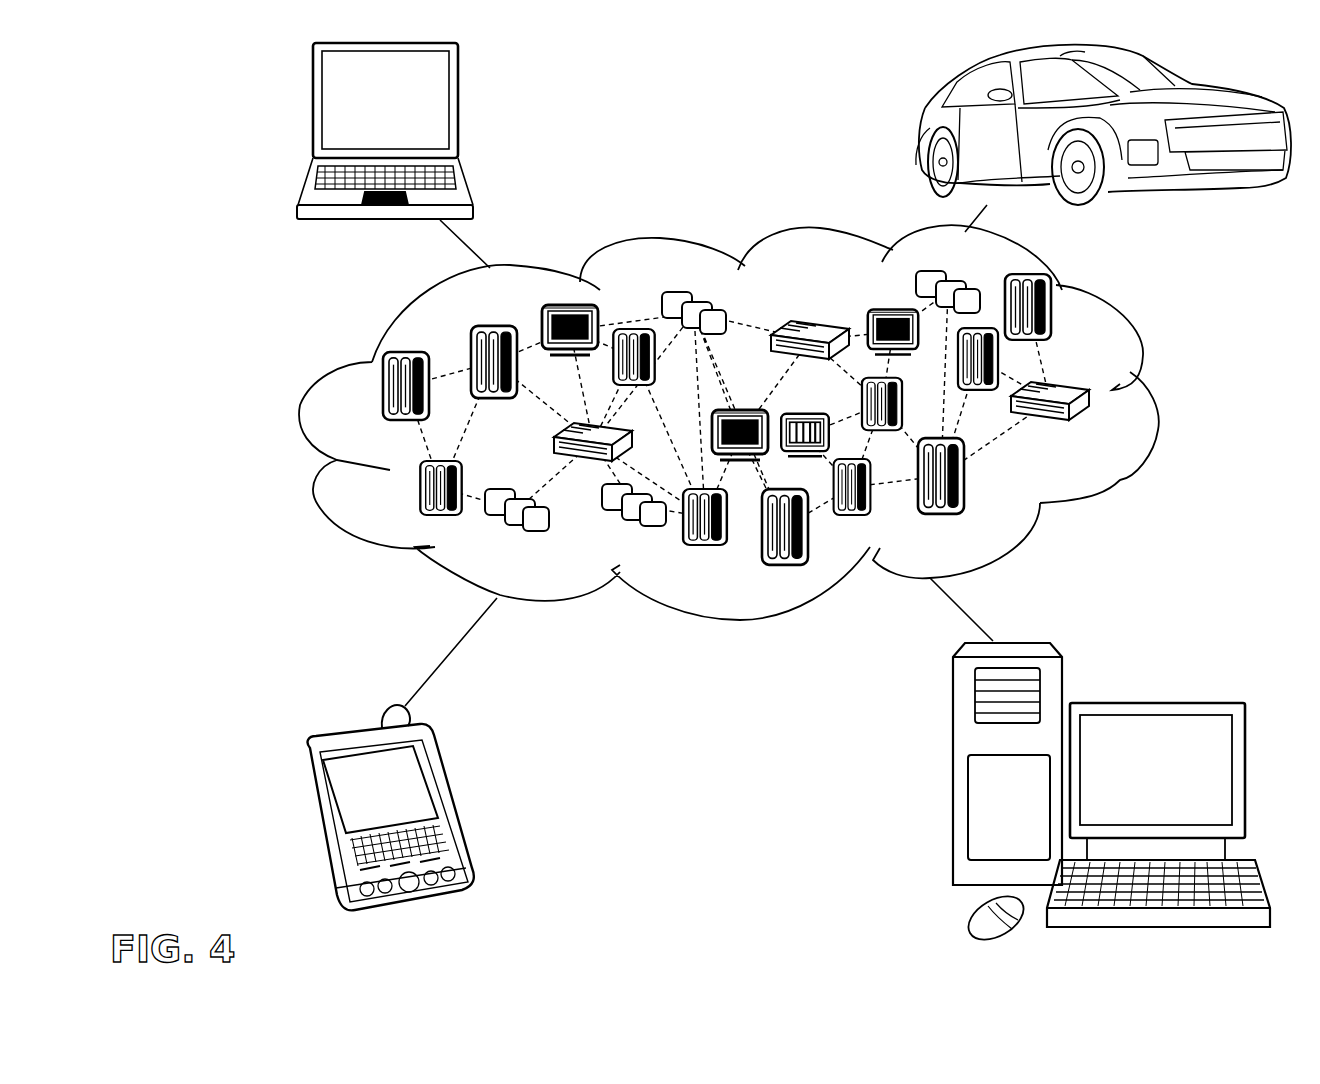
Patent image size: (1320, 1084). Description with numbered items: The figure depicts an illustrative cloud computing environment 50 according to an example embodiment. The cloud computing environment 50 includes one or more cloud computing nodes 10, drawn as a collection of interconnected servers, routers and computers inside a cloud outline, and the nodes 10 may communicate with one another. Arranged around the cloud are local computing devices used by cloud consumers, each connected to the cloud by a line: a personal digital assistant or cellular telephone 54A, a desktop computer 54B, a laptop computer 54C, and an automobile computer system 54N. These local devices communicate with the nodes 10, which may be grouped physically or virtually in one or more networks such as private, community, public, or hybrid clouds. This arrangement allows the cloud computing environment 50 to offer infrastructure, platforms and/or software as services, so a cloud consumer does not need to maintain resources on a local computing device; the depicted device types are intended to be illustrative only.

The cloud computing environment 50 is at (1155, 407).
The cloud computing nodes 10 is at (1093, 430).
The personal digital assistant or cellular telephone 54A is at (452, 802).
The desktop computer 54B is at (1153, 703).
The laptop computer 54C is at (460, 112).
The automobile computer system 54N is at (920, 130).